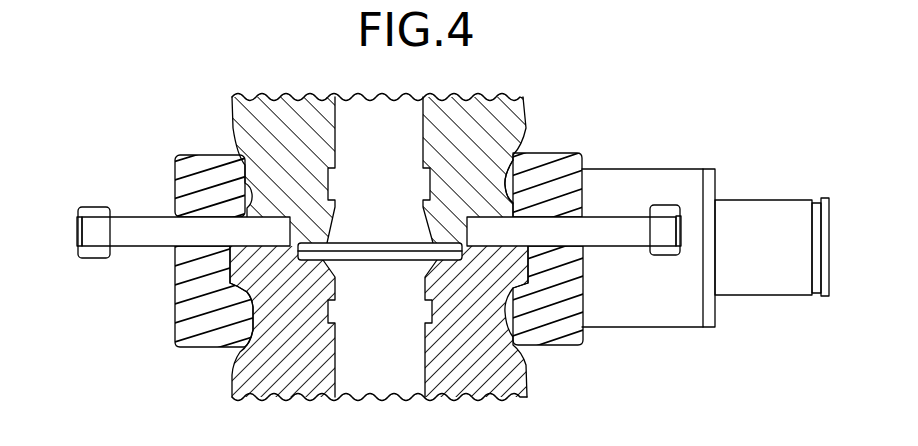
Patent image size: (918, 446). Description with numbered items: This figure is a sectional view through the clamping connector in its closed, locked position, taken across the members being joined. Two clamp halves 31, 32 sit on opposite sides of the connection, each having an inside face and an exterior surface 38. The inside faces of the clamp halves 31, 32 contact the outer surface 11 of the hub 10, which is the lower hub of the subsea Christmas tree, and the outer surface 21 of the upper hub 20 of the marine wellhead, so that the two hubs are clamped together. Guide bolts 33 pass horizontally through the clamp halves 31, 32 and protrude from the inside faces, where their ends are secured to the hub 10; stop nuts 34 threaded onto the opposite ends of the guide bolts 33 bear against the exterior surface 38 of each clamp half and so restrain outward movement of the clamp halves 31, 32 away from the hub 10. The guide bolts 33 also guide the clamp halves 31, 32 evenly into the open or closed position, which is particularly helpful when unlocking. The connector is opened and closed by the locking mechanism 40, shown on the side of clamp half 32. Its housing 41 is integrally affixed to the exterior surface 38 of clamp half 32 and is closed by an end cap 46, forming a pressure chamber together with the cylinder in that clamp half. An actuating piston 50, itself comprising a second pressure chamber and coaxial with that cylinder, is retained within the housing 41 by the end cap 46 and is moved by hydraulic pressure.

The hub 10 is at (476, 111).
The outer surface 11 is at (513, 165).
The upper hub 20 is at (518, 386).
The outer surface 21 is at (562, 287).
The clamp half 31 is at (202, 167).
The clamp half 32 is at (566, 168).
The guide bolt 33 is at (146, 219).
The stop nut 34 is at (88, 228).
The exterior surface 38 is at (176, 302).
The locking mechanism 40 is at (705, 207).
The housing 41 is at (592, 177).
The end cap 46 is at (708, 168).
The actuating piston 50 is at (770, 207).